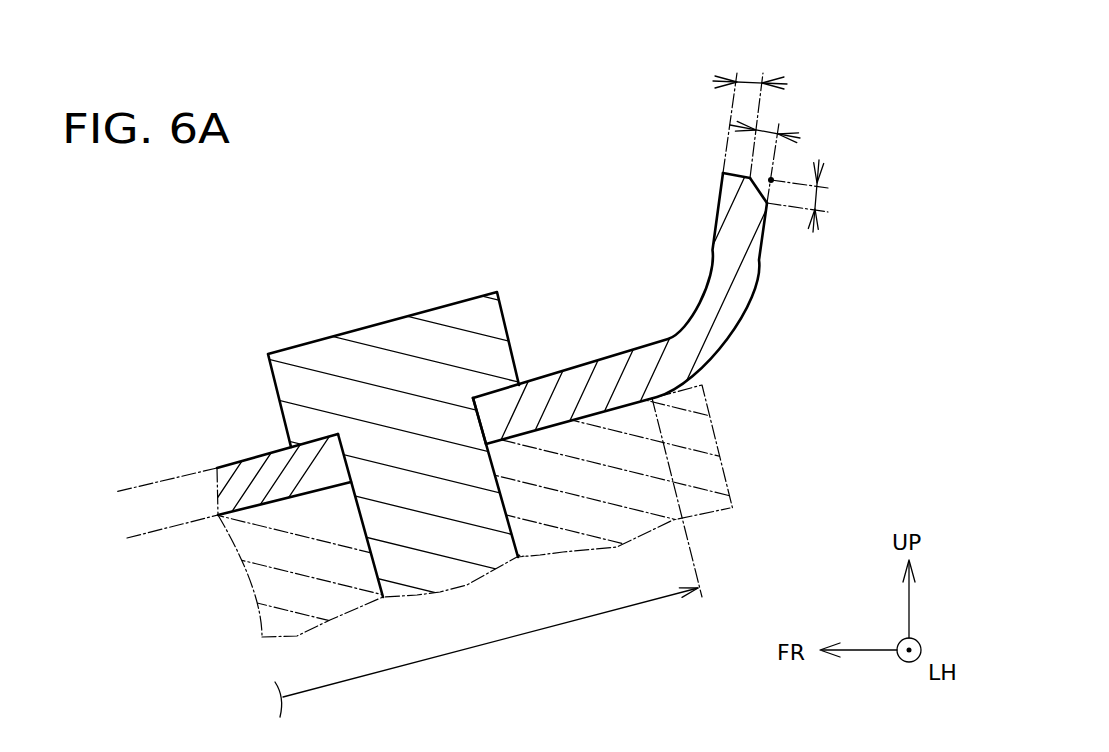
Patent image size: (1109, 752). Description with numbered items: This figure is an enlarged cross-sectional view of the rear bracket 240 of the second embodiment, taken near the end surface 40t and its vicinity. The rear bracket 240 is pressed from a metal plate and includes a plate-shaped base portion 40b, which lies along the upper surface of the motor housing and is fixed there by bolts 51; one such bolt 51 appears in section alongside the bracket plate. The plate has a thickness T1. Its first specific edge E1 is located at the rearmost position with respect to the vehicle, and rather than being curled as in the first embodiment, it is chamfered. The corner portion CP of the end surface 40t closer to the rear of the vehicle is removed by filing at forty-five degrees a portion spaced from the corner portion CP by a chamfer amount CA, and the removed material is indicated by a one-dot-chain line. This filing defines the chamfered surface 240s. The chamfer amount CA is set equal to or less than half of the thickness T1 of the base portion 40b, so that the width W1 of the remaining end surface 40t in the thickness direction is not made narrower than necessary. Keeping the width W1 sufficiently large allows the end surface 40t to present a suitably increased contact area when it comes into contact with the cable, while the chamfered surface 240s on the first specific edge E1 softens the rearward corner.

The bolts 51 is at (367, 363).
The rear bracket 240 is at (567, 358).
The chamfered surface 240s is at (757, 187).
The end surface 40t is at (745, 176).
The base portion 40b is at (515, 638).
The width W1 is at (752, 80).
The chamfer amount CA is at (768, 125).
The corner portion CP is at (773, 179).
The first specific edge E1 is at (704, 174).
The thickness T1 is at (133, 507).